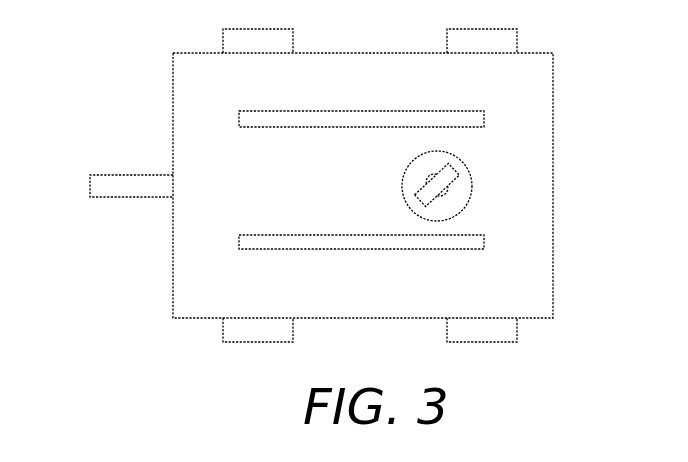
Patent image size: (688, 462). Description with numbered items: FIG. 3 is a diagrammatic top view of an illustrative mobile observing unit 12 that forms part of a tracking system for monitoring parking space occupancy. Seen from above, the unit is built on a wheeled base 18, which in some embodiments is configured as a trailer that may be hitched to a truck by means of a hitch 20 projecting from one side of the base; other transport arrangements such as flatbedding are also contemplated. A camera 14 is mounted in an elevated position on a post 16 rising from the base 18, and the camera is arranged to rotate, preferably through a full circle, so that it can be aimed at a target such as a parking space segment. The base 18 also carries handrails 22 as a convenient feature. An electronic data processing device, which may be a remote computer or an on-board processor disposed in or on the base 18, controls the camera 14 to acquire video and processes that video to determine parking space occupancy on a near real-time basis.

The mobile observing unit 12 is at (130, 107).
The camera 14 is at (459, 168).
The post 16 is at (447, 196).
The wheeled base 18 is at (553, 108).
The hitch 20 is at (128, 198).
The handrails 22 is at (333, 111).